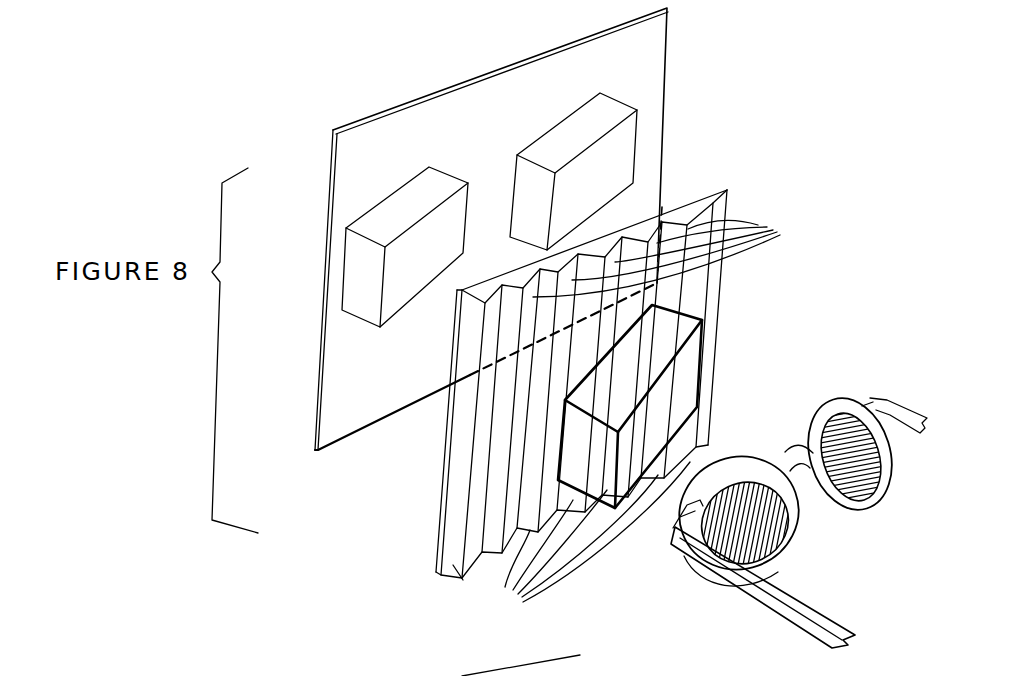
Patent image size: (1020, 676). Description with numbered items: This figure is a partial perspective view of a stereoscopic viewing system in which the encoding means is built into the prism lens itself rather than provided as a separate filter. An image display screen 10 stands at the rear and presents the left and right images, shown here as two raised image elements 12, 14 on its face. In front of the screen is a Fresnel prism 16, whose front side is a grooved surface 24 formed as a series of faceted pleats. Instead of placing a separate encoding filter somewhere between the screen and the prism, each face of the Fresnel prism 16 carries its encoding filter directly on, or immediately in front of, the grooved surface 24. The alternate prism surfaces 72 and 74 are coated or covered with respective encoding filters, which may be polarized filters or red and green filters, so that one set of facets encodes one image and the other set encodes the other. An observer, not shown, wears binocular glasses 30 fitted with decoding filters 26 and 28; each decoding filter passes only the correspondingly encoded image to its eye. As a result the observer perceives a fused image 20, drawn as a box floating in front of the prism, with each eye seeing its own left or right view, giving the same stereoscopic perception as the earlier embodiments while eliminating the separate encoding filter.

The image display screen 10 is at (389, 122).
The first image element 12 is at (347, 263).
The second image element 14 is at (627, 157).
The Fresnel prism 16 is at (542, 384).
The fused image 20 is at (690, 358).
The grooved surface 24 is at (464, 462).
The decoding filter 26 is at (755, 525).
The decoding filter 28 is at (870, 400).
The binocular glasses 30 is at (680, 553).
The prism surface 72 is at (728, 199).
The prism surface 74 is at (447, 582).